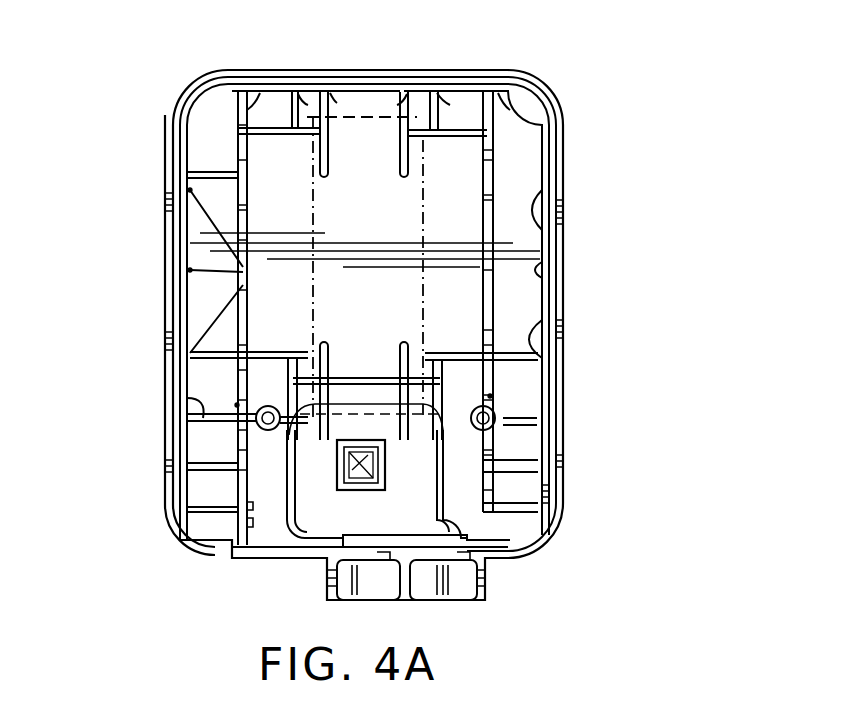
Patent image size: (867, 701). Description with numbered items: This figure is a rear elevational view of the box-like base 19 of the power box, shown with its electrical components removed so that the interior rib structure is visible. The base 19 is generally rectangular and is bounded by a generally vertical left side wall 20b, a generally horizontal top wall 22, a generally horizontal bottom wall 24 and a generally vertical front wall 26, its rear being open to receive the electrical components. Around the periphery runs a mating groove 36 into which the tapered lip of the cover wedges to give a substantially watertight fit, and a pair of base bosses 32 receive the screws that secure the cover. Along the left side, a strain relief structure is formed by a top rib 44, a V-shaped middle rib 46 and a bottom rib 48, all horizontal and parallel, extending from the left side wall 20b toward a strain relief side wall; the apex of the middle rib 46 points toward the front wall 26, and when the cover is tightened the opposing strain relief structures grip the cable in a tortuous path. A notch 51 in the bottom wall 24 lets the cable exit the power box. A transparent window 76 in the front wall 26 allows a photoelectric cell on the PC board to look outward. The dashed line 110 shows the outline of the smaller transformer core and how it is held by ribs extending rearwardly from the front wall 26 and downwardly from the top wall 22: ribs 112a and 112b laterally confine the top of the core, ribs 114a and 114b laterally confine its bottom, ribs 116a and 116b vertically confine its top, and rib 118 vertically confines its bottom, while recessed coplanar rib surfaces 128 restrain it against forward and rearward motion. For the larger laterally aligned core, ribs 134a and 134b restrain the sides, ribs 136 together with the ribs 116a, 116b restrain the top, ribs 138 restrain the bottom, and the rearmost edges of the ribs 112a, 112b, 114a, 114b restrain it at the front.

The base 19 is at (580, 318).
The left side wall 20b is at (165, 228).
The top wall 22 is at (283, 76).
The bottom wall 24 is at (300, 562).
The front wall 26 is at (372, 231).
The base bosses 32 is at (255, 428).
The peripheral mating groove 36 is at (182, 150).
The top rib 44 is at (190, 400).
The middle rib 46 is at (187, 478).
The bottom rib 48 is at (185, 502).
The notch 51 is at (210, 552).
The transparent window 76 is at (365, 490).
The dashed line 110 is at (423, 167).
The rib 112a is at (487, 147).
The rib 112b is at (243, 143).
The rib 114a is at (478, 353).
The rib 114b is at (300, 352).
The rib 116a is at (420, 97).
The rib 116b is at (338, 95).
The rib 118 is at (388, 384).
The recessed coplanar rib surfaces 128 is at (404, 140).
The rib 134a is at (527, 343).
The rib 134b is at (248, 270).
The ribs 136 is at (263, 95).
The ribs 138 is at (237, 405).